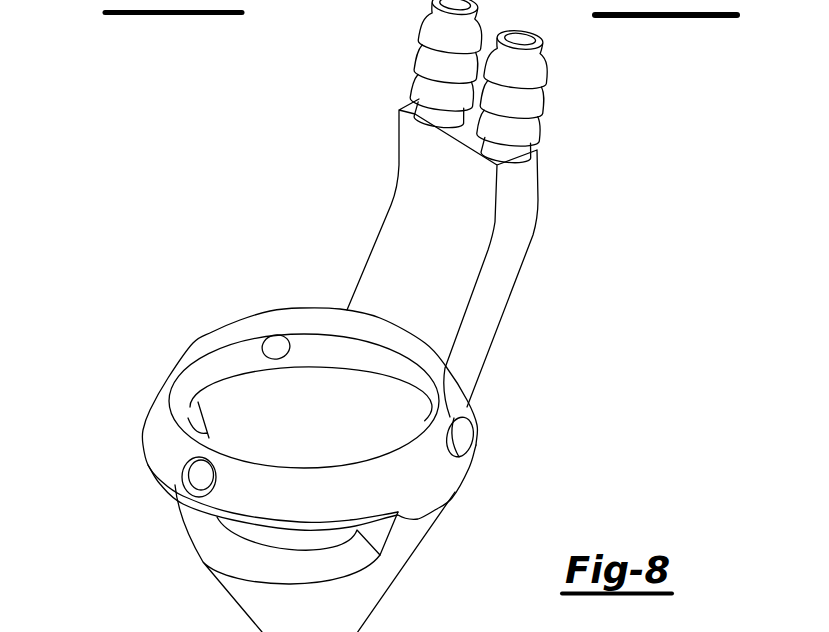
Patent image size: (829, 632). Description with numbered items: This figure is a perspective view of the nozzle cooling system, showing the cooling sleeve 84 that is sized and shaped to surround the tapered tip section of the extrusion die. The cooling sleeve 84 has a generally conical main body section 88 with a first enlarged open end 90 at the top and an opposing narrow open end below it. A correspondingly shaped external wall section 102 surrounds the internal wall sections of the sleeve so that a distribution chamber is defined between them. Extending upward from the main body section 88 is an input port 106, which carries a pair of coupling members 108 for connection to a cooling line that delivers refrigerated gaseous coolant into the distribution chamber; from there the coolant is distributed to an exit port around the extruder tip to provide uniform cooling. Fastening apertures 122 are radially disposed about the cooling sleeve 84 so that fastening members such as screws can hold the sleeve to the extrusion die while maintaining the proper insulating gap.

The cooling sleeve 84 is at (304, 174).
The main body section 88 is at (462, 490).
The first enlarged open end 90 is at (218, 360).
The external wall section 102 is at (386, 577).
The input ports 106 is at (382, 236).
The coupling members 108 is at (528, 98).
The fastening apertures 122 is at (452, 438).